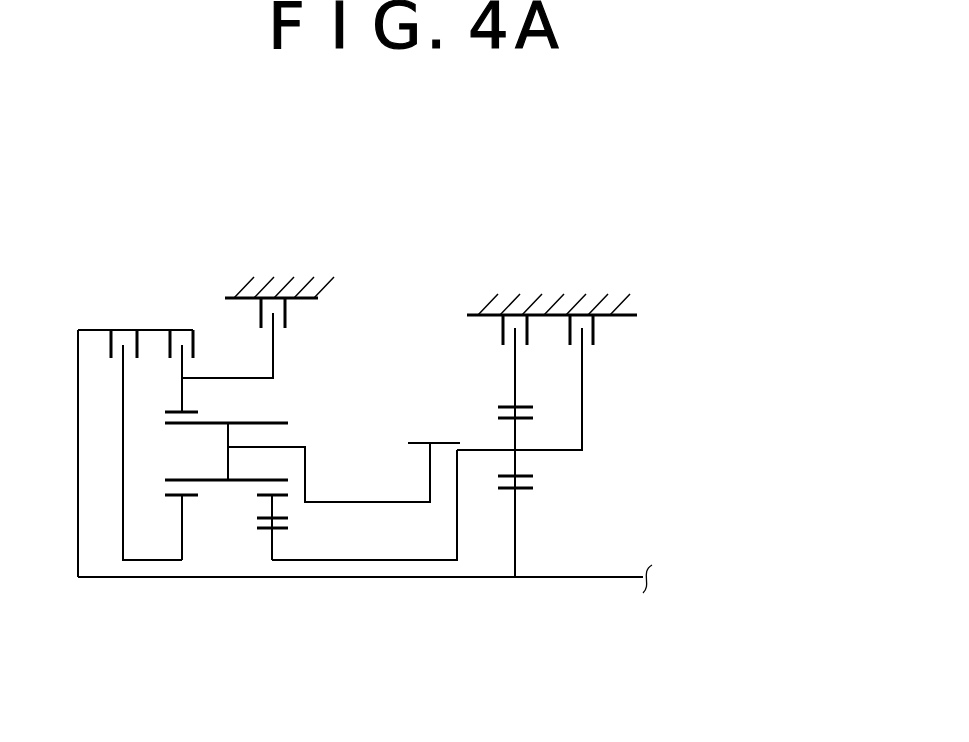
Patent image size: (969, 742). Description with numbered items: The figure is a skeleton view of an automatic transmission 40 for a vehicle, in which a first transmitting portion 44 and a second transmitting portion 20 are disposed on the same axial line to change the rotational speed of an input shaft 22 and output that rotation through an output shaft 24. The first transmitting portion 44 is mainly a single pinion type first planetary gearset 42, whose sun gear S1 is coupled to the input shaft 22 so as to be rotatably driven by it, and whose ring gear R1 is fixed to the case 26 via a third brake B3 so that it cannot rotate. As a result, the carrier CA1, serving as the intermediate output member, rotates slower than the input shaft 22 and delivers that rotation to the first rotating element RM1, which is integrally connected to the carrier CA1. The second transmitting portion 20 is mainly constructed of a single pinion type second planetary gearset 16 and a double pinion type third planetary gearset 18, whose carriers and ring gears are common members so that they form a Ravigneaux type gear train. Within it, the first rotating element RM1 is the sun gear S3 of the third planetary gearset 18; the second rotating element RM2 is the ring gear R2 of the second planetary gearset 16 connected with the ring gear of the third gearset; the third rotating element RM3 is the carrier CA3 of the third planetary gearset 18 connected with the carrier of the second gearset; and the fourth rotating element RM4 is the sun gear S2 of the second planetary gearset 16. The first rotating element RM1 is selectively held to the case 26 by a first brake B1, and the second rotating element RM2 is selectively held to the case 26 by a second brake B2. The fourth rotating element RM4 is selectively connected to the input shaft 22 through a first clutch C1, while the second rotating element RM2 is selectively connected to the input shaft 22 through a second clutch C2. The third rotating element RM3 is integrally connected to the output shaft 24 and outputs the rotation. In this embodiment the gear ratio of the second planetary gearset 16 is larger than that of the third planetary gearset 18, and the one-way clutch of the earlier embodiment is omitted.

The second planetary gearset 16 is at (305, 524).
The third planetary gearset 18 is at (357, 559).
The second transmitting portion 20 is at (312, 247).
The input shaft 22 is at (633, 579).
The output shaft 24 is at (442, 443).
The case 26 is at (268, 280).
The automatic transmission for a vehicle 40 is at (541, 241).
The first planetary gearset 42 is at (516, 588).
The first transmitting portion 44 is at (467, 293).
The first clutch C1 is at (137, 427).
The second clutch C2 is at (176, 353).
The first brake B1 is at (618, 335).
The second brake B2 is at (318, 308).
The third brake B3 is at (482, 335).
The ring gear R1 is at (550, 388).
The ring gear R2 is at (188, 412).
The sun gear S1 is at (520, 493).
The sun gear S2 is at (190, 496).
The sun gear S3 is at (278, 532).
The carrier CA1 is at (583, 423).
The carrier CA3 is at (357, 443).
The first rotating element RM1 is at (360, 562).
The second rotating element RM2 is at (222, 378).
The third rotating element RM3 is at (348, 503).
The fourth rotating element RM4 is at (185, 542).